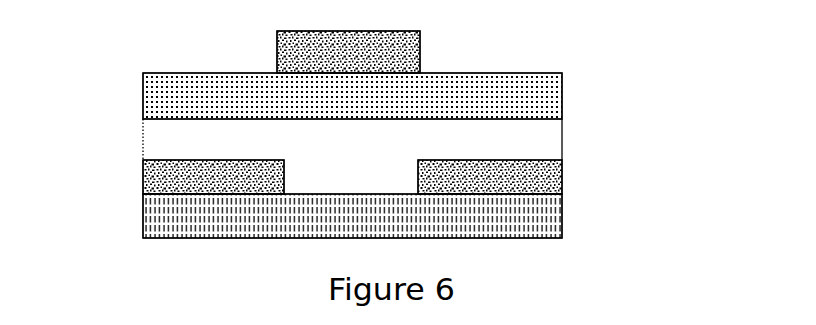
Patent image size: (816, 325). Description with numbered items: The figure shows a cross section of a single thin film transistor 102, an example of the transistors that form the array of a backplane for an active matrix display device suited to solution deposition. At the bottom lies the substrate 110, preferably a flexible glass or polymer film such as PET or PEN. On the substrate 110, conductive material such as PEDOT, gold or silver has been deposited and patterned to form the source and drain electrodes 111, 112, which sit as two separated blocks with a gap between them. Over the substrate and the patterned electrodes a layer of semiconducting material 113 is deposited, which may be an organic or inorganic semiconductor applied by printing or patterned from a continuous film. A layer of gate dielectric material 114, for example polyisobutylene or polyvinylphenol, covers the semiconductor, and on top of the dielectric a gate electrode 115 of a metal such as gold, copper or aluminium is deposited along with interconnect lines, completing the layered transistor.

The thin film transistor 102 is at (411, 129).
The substrate 110 is at (150, 221).
The source electrode 111 is at (150, 168).
The drain electrode 112 is at (530, 180).
The semiconducting material layer 113 is at (537, 137).
The gate dielectric material layer 114 is at (146, 83).
The gate electrode 115 is at (387, 49).